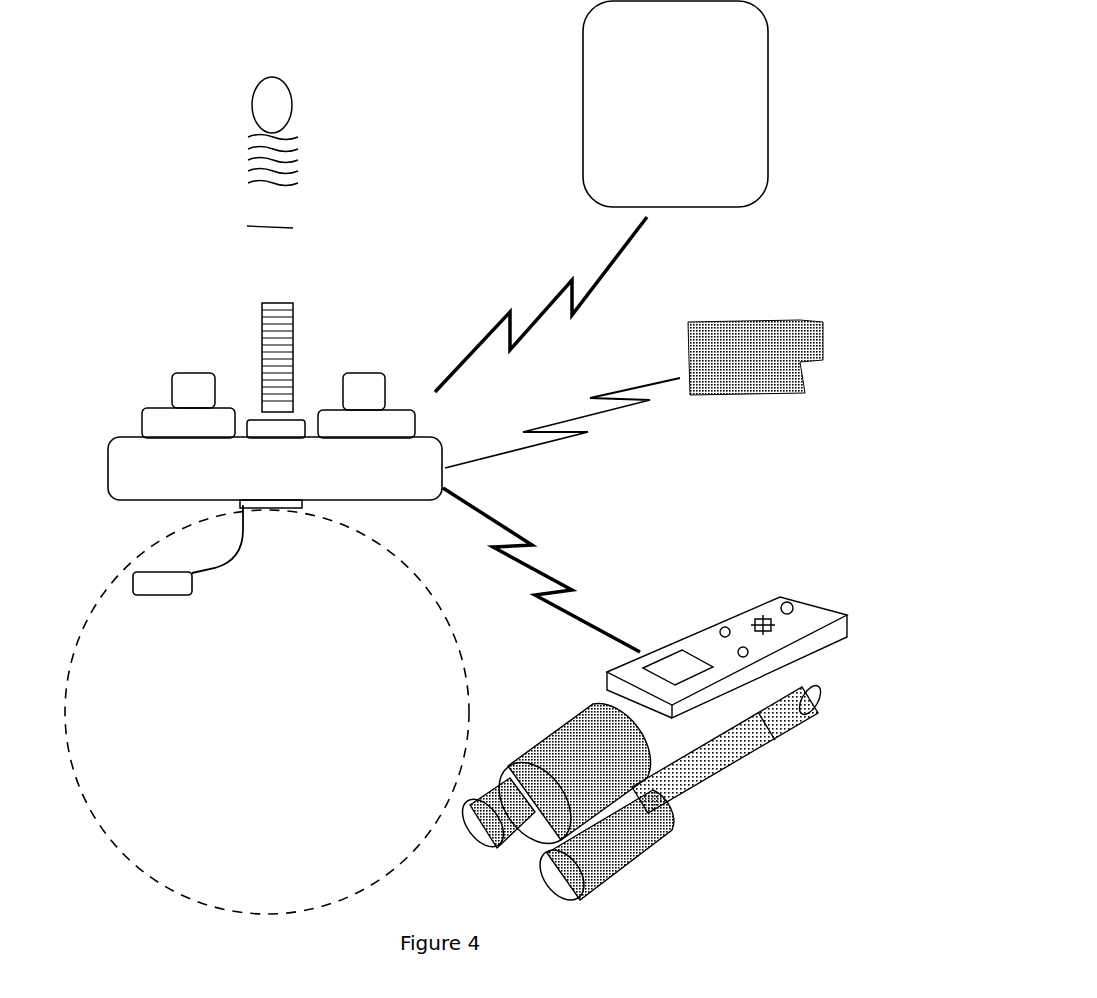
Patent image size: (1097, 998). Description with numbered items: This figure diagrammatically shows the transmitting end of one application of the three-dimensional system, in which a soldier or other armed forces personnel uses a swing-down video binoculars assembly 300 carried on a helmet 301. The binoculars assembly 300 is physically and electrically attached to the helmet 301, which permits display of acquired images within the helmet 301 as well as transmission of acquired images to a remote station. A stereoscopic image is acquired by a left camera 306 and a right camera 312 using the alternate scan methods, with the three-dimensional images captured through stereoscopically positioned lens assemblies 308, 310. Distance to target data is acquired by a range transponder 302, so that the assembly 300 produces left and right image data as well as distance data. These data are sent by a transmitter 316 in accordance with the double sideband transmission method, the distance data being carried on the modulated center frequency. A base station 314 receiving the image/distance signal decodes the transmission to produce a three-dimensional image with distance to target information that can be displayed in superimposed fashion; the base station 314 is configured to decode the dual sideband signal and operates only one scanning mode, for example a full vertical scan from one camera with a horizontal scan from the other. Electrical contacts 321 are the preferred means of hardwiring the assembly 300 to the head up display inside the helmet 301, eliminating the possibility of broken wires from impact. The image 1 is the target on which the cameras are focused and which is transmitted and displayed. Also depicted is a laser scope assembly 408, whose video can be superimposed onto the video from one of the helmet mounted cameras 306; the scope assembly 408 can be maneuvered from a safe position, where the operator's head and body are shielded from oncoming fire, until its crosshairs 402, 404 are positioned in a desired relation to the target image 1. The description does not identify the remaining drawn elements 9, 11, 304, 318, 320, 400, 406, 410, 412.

The image 1 is at (275, 103).
The threaded bolt 9 is at (288, 306).
The spring 11 is at (283, 228).
The swing-down video binoculars assembly 300 is at (387, 467).
The helmet 301 is at (112, 585).
The range transponder 302 is at (288, 435).
The bottom plate 304 is at (240, 502).
The left camera 306 is at (152, 410).
The lens assembly 308 is at (180, 390).
The lens assembly 310 is at (367, 378).
The right camera 312 is at (373, 418).
The base station 314 is at (645, 88).
The transmitter 316 is at (590, 303).
The wireless signal 318 is at (597, 439).
The battery module 320 is at (150, 598).
The electrical contacts 321 is at (240, 558).
The remote control device 400 is at (620, 685).
The crosshairs 402 is at (688, 638).
The crosshairs 404 is at (743, 652).
The button 406 is at (772, 618).
The laser scope assembly 408 is at (493, 795).
The battery cell 410 is at (620, 857).
The power supply 412 is at (768, 392).